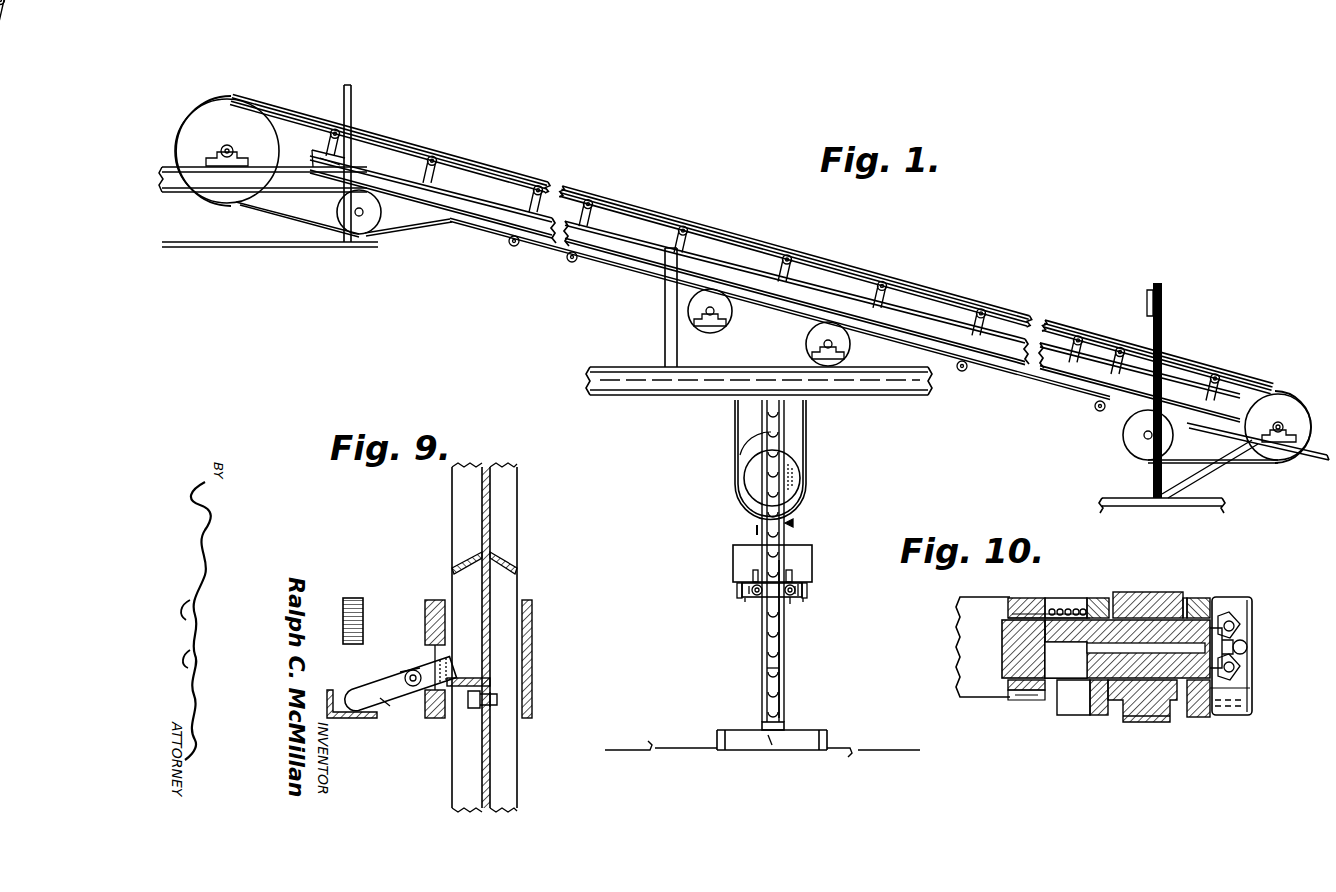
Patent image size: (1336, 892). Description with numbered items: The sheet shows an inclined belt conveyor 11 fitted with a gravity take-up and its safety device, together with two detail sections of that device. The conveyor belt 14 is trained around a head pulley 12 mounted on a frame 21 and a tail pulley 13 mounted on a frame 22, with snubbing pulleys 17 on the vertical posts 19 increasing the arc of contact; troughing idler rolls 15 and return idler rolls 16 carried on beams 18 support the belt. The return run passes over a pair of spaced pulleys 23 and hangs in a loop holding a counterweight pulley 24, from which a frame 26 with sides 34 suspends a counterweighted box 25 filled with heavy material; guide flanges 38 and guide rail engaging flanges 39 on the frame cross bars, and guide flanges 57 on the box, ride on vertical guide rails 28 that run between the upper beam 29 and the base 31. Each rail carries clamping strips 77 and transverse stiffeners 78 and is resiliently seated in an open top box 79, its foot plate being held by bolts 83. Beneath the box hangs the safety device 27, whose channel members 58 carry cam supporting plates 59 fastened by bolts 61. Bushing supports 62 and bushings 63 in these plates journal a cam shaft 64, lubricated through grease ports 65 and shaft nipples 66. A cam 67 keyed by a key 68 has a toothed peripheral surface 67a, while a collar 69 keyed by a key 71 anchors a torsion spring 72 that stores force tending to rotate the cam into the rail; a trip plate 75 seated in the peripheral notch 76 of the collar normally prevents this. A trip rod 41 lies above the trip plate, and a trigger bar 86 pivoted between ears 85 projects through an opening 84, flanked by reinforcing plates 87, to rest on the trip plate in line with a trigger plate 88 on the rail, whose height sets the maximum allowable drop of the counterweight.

In FIG. 1, the inclined belt conveyor 11 is at (838, 272).
In FIG. 1, the head pulley 12 is at (268, 148).
In FIG. 1, the tail pulley 13 is at (1283, 402).
In FIG. 1, the conveyor belt 14 is at (480, 165).
In FIG. 1, the troughing idler rolls 15 is at (340, 137).
In FIG. 1, the return idler rolls 16 is at (520, 246).
In FIG. 1, the snubbing pulleys 17 is at (383, 217).
In FIG. 1, the beams 18 is at (490, 212).
In FIG. 1, the vertical posts 19 is at (354, 97).
In FIG. 1, the frame 21 is at (282, 185).
In FIG. 1, the frame 22 is at (1280, 456).
In FIG. 1, the spaced pulleys 23 is at (820, 345).
In FIG. 1, the counterweight pulley 24 is at (798, 489).
In FIG. 1, the counterweighted box 25 is at (812, 558).
In FIG. 1, the frame 26 is at (795, 526).
In FIG. 1, the safety device 27 is at (800, 600).
In FIG. 1, the vertical guide rails 28 is at (782, 655).
In FIG. 9, the vertical guide rails 28 is at (517, 530).
In FIG. 1, the upper beam 29 is at (852, 384).
In FIG. 1, the base 31 is at (800, 738).
In FIG. 1, the sides 34 is at (800, 468).
In FIG. 1, the guide flanges 38 is at (758, 530).
In FIG. 1, the guide rail engaging flanges 39 is at (760, 443).
In FIG. 9, the trip rod 41 is at (366, 610).
In FIG. 1, the guide flanges 57 is at (752, 574).
In FIG. 1, the channel members 58 is at (804, 596).
In FIG. 10, the channel members 58 is at (978, 698).
In FIG. 1, the cam supporting plates 59 is at (741, 591).
In FIG. 9, the cam supporting plates 59 is at (534, 692).
In FIG. 10, the cam supporting plates 59 is at (1104, 715).
In FIG. 1, the bolts 61 is at (810, 590).
In FIG. 10, the bolts 61 is at (1235, 626).
In FIG. 1, the bushing support 62 is at (748, 602).
In FIG. 10, the bushing support 62 is at (1096, 598).
In FIG. 10, the bushing 63 is at (1190, 618).
In FIG. 1, the cam shaft 64 is at (793, 584).
In FIG. 10, the cam shaft 64 is at (1240, 688).
In FIG. 10, the grease ports 65 is at (1222, 628).
In FIG. 10, the shaft nipples 66 is at (1247, 646).
In FIG. 10, the cam 67 is at (1152, 710).
In FIG. 10, the toothed peripheral surface 67a is at (1135, 720).
In FIG. 10, the key 68 is at (1150, 612).
In FIG. 10, the collar 69 is at (1040, 598).
In FIG. 10, the key 71 is at (1020, 598).
In FIG. 10, the torsion spring 72 is at (1070, 606).
In FIG. 9, the trip plate 75 is at (345, 718).
In FIG. 10, the peripheral notch 76 is at (1030, 698).
In FIG. 1, the clamping strips 77 is at (782, 690).
In FIG. 1, the transverse stiffeners 78 is at (782, 670).
In FIG. 9, the transverse stiffeners 78 is at (460, 570).
In FIG. 1, the open top box 79 is at (784, 723).
In FIG. 1, the bolts 83 is at (772, 745).
In FIG. 9, the opening 84 is at (447, 655).
In FIG. 9, the ears 85 is at (420, 662).
In FIG. 9, the trigger bar 86 is at (388, 698).
In FIG. 9, the reinforcing plates 87 is at (430, 620).
In FIG. 9, the trigger plate 88 is at (488, 678).